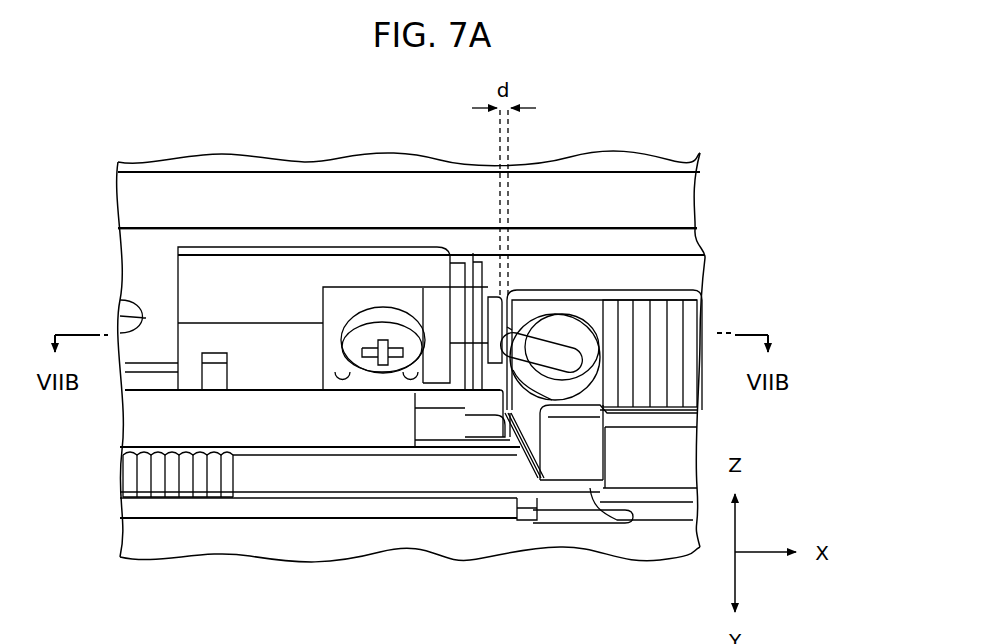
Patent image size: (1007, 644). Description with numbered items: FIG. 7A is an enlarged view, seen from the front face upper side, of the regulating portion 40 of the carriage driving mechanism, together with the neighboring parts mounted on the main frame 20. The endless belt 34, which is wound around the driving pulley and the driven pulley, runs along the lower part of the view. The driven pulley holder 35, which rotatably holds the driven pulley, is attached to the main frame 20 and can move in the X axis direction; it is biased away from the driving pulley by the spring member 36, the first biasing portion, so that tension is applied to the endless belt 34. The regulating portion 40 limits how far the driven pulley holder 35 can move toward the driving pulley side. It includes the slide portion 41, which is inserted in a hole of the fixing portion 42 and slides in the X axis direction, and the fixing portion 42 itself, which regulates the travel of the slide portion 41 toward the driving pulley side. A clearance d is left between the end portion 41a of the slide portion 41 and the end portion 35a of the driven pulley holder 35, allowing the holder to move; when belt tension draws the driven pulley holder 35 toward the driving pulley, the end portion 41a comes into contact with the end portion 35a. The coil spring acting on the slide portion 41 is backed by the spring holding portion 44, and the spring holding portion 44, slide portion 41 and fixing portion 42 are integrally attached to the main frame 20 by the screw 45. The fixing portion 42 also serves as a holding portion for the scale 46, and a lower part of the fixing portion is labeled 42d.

The main frame 20 is at (660, 195).
The endless belt 34 is at (418, 473).
The driven pulley holder 35 is at (683, 445).
The end portion of the driven pulley holder 35a is at (507, 327).
The spring member 36 is at (675, 323).
The regulating portion 40 is at (295, 226).
The slide portion 41 is at (494, 297).
The end portion of the slide portion 41a is at (505, 312).
The fixing portion 42 is at (475, 262).
The clamp lower portion 42d is at (480, 423).
The spring holding portion 44 is at (227, 273).
The screw 45 is at (387, 307).
The scale 46 is at (147, 417).